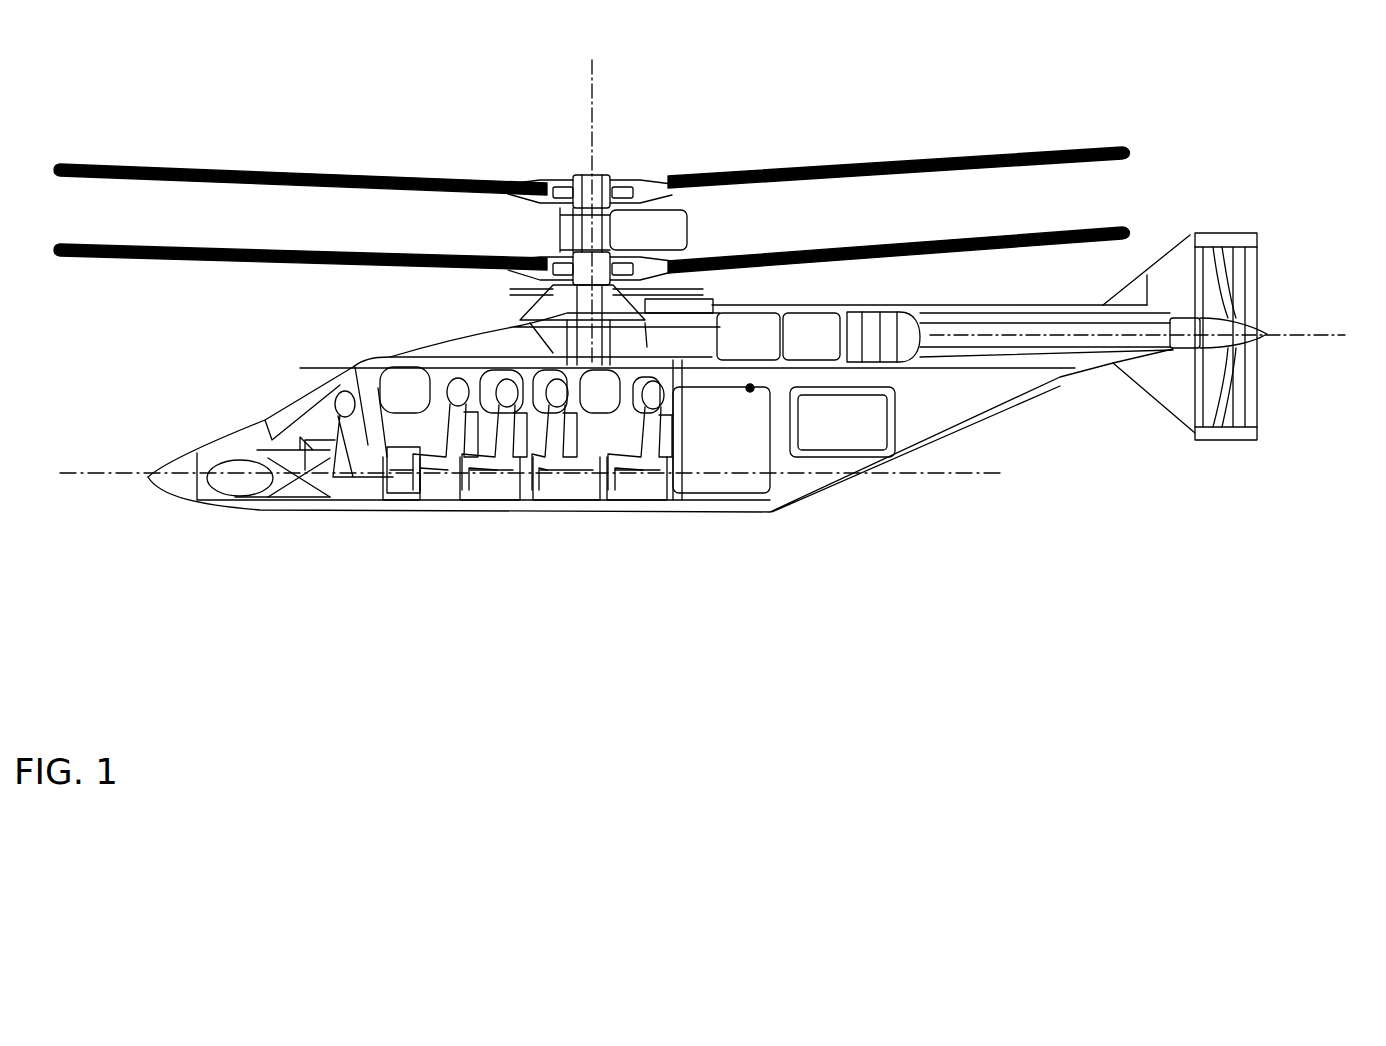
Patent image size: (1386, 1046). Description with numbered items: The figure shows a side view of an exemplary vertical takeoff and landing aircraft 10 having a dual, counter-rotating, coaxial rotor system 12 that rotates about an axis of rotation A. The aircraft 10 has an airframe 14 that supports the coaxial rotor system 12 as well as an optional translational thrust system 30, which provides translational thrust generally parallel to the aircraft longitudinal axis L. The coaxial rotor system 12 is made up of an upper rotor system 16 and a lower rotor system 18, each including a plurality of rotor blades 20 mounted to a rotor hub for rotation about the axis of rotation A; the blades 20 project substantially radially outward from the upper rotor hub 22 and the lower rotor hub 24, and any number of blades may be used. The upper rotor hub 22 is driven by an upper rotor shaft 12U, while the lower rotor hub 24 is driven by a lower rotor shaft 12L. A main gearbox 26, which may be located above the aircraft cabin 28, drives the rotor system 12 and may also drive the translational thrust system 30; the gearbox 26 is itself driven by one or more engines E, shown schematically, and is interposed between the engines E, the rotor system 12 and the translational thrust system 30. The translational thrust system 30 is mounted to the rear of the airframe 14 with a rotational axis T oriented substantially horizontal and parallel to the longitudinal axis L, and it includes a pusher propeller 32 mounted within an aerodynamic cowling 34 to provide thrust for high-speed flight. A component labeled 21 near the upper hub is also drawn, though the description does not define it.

The vertical takeoff and landing aircraft 10 is at (927, 118).
The dual, counter-rotating, coaxial rotor system 12 is at (690, 152).
The upper rotor shaft 12U is at (596, 230).
The lower rotor shaft 12L is at (598, 314).
The airframe 14 is at (395, 350).
The upper rotor system 16 is at (560, 160).
The lower rotor system 18 is at (500, 257).
The rotor blades 20 is at (802, 257).
The upper rotor blade grip 21 is at (536, 184).
The upper rotor hub 22 is at (616, 176).
The lower rotor hub 24 is at (650, 243).
The main gearbox 26 is at (533, 290).
The aircraft cabin 28 is at (488, 480).
The translational thrust system 30 is at (1280, 280).
The pusher propeller 32 is at (1220, 304).
The aerodynamic cowling 34 is at (1229, 236).
The axis of rotation A is at (608, 90).
The engines E is at (836, 322).
The rotational axis T is at (1301, 335).
The aircraft longitudinal axis L is at (979, 471).